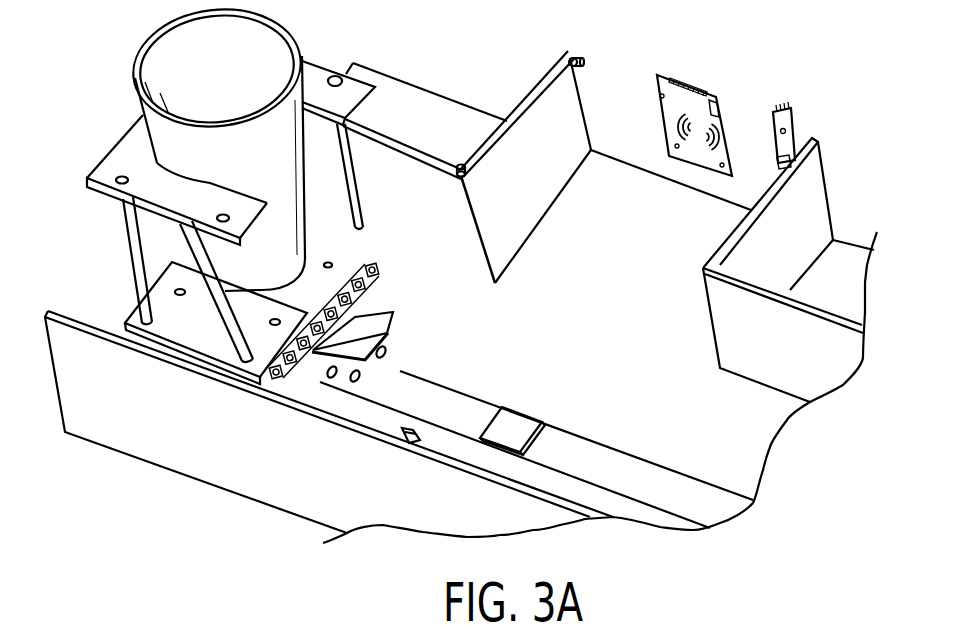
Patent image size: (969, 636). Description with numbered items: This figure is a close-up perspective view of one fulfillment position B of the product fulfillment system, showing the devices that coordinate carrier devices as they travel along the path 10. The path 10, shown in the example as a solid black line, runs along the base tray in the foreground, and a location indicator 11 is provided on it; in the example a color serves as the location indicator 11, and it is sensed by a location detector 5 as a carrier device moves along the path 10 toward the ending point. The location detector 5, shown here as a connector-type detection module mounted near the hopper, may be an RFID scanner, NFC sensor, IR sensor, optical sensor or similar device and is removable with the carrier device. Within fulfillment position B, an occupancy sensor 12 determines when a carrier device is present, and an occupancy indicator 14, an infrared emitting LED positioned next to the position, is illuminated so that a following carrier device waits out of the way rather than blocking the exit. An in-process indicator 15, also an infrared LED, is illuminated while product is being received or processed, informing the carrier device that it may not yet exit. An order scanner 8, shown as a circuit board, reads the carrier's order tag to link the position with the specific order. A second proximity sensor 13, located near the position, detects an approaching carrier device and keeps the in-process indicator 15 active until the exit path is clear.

The location detector 5 is at (330, 356).
The order scanner 8 is at (698, 166).
The path 10 is at (641, 457).
The location indicator 11 is at (512, 424).
The occupancy sensor 12 is at (776, 166).
The second proximity sensor 13 is at (409, 443).
The occupancy indicator 14 is at (460, 162).
The in-process indicator 15 is at (580, 63).
The fulfillment position B is at (602, 213).